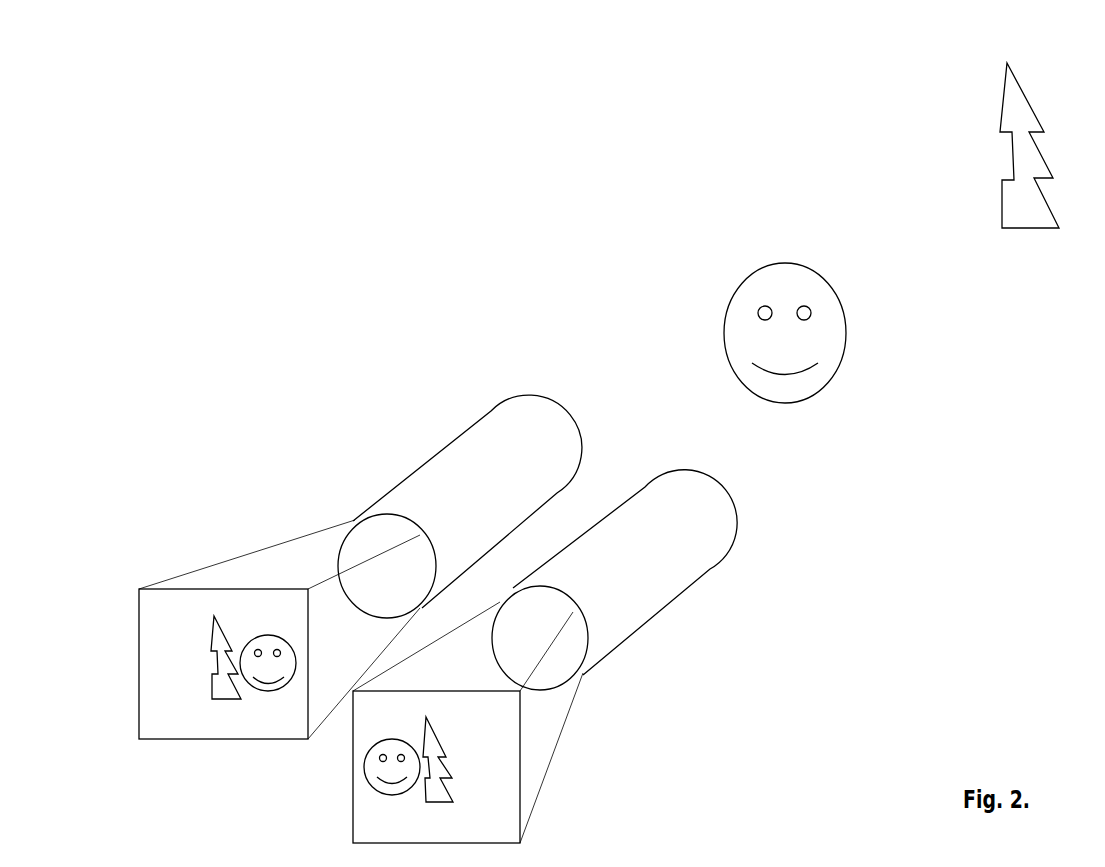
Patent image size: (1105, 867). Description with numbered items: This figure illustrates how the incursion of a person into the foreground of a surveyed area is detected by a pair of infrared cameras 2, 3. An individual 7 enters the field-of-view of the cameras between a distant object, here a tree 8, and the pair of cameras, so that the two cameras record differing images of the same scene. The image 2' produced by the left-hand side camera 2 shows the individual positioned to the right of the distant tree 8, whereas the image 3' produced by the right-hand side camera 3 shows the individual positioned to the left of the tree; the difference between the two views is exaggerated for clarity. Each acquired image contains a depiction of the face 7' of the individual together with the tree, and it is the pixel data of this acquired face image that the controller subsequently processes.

The infrared camera 2 is at (460, 489).
The infrared camera 3 is at (614, 597).
The individual 7 is at (825, 333).
The tree 8 is at (1002, 200).
The image 2' is at (237, 629).
The image 3' is at (508, 722).
The face 7' is at (298, 657).